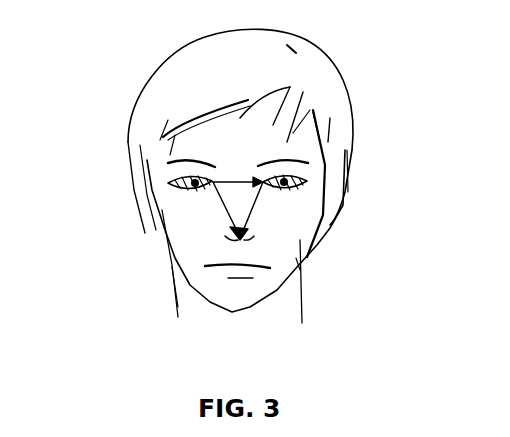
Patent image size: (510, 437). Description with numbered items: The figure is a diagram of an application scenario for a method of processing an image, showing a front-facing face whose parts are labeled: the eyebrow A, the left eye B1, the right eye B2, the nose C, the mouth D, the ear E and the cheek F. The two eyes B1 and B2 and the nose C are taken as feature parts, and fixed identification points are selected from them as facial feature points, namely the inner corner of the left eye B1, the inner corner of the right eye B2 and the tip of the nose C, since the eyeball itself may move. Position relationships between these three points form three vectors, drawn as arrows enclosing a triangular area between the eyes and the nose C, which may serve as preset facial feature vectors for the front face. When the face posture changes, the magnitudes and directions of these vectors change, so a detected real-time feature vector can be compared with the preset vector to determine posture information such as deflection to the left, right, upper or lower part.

The eyebrow A is at (192, 160).
The left eye B1 is at (180, 188).
The right eye B2 is at (303, 182).
The nose C is at (260, 232).
The mouth D is at (233, 275).
The ear E is at (347, 190).
The cheek F is at (298, 263).